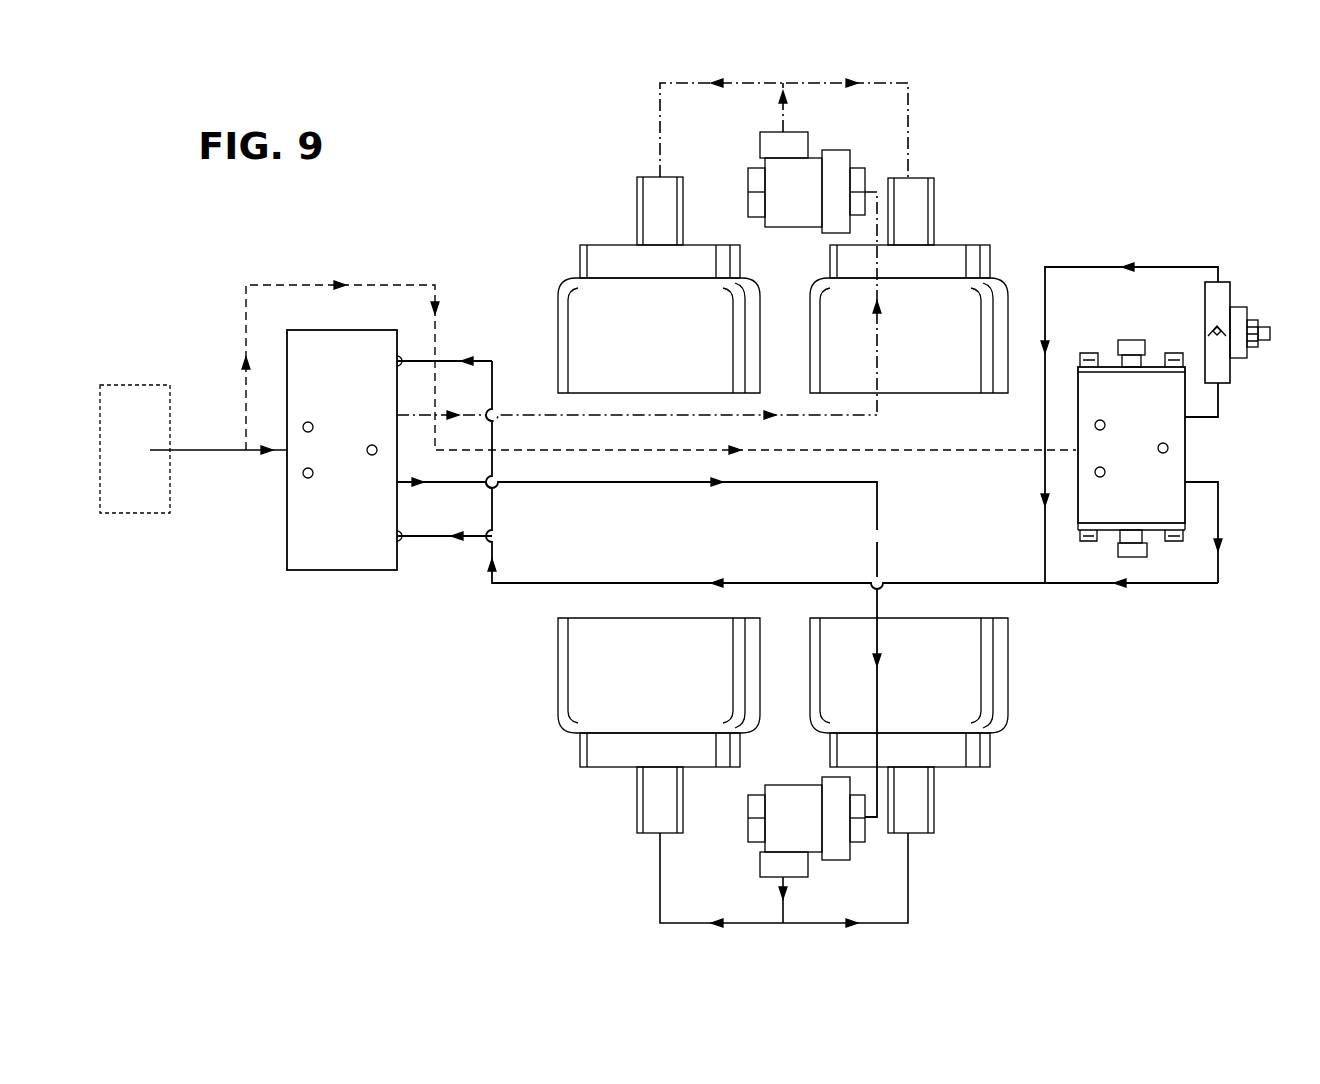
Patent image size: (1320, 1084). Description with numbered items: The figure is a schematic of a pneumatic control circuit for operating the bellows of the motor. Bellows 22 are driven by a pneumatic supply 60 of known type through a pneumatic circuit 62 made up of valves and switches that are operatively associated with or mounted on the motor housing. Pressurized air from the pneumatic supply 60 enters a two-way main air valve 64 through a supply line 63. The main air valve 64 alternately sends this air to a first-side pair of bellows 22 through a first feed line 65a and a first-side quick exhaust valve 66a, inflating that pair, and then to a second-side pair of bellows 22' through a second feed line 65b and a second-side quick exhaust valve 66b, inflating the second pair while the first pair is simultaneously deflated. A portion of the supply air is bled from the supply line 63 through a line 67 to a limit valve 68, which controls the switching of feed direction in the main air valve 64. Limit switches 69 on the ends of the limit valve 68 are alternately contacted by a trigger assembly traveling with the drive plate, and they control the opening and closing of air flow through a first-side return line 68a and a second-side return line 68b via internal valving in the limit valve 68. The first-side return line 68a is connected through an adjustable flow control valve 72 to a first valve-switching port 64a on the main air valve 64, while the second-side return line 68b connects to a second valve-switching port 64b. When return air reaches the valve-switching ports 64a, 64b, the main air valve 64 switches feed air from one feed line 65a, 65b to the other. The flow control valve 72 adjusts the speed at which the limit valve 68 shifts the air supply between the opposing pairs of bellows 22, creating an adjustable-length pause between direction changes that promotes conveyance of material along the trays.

The pneumatic supply 60 is at (137, 385).
The supply line 63 is at (215, 452).
The two-way main air valve 64 is at (315, 545).
The first valve-switching port 64a is at (397, 538).
The second valve-switching port 64b is at (397, 360).
The first feed line 65a is at (435, 486).
The second feed line 65b is at (522, 415).
The line 67 is at (280, 285).
The pneumatic circuit 62 is at (488, 598).
The second-side pair of bellows 22' is at (788, 236).
The bellows 22 is at (803, 772).
The second-side quick exhaust valve 66b is at (798, 210).
The first-side quick exhaust valve 66a is at (798, 800).
The limit valve 68 is at (1178, 470).
The first-side return line 68a is at (1177, 262).
The second-side return line 68b is at (1220, 508).
The limit switches 69 is at (1130, 340).
The flow control valve 72 is at (1220, 290).